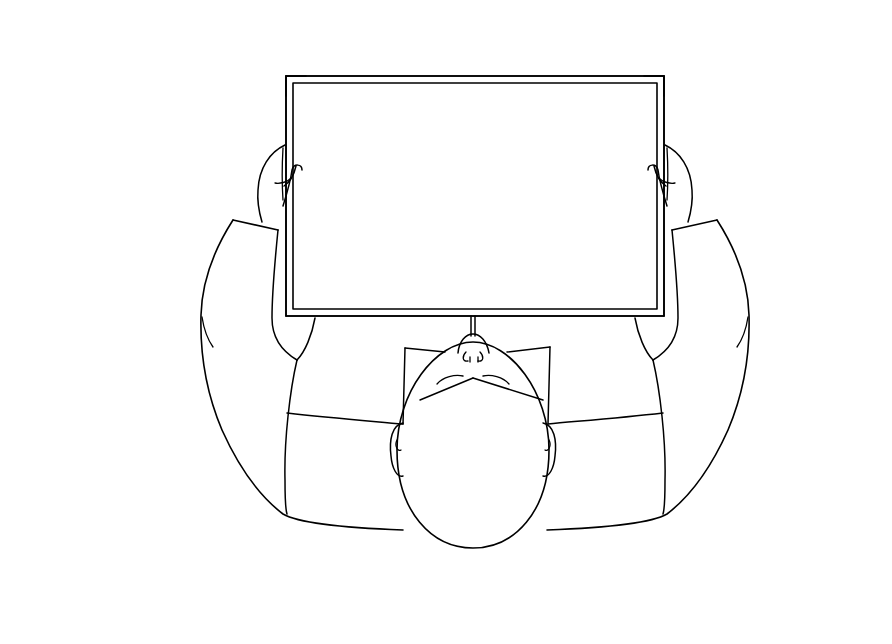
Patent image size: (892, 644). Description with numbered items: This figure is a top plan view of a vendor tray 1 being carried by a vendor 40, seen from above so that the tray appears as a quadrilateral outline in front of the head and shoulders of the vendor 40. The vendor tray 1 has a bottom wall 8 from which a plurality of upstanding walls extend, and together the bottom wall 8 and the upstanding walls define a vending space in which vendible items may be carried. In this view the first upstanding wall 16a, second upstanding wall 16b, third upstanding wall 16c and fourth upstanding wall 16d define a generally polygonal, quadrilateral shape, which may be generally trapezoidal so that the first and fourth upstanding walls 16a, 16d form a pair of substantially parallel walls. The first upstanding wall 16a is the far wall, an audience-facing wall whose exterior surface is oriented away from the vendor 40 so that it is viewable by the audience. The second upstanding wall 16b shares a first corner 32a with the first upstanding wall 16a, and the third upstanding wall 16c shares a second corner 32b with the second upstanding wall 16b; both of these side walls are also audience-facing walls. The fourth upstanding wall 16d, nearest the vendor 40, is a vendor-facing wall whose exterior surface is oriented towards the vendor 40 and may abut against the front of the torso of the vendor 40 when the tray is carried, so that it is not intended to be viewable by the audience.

The vendor tray 1 is at (163, 47).
The bottom wall 8 is at (590, 93).
The first upstanding wall 16a is at (484, 75).
The second upstanding wall 16b is at (284, 146).
The third upstanding wall 16c is at (665, 146).
The fourth upstanding wall 16d is at (393, 318).
The first corner 32a is at (284, 75).
The second corner 32b is at (666, 75).
The vendor 40 is at (455, 549).